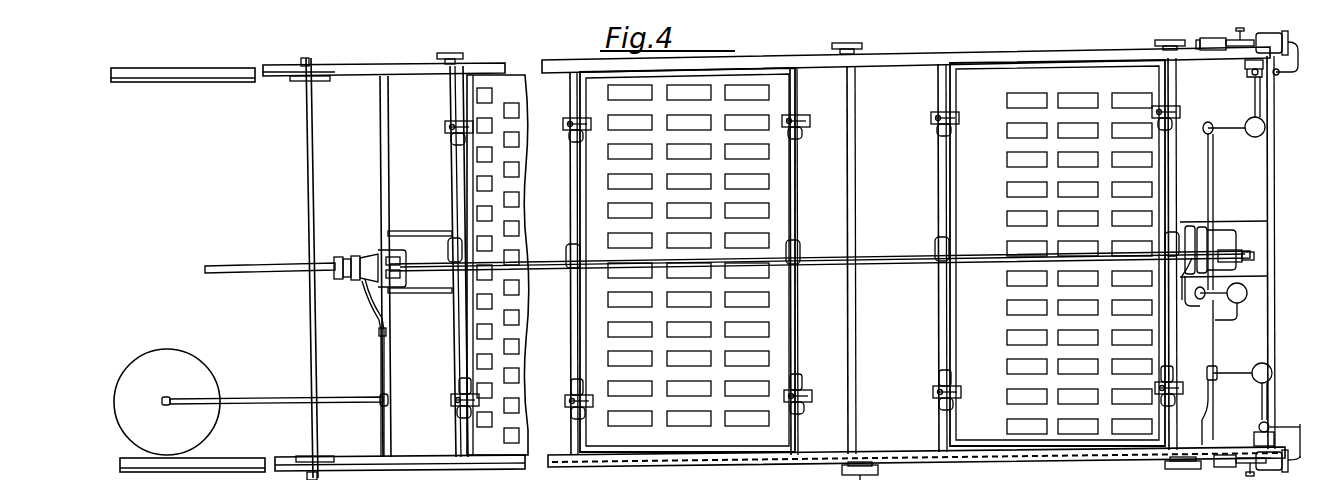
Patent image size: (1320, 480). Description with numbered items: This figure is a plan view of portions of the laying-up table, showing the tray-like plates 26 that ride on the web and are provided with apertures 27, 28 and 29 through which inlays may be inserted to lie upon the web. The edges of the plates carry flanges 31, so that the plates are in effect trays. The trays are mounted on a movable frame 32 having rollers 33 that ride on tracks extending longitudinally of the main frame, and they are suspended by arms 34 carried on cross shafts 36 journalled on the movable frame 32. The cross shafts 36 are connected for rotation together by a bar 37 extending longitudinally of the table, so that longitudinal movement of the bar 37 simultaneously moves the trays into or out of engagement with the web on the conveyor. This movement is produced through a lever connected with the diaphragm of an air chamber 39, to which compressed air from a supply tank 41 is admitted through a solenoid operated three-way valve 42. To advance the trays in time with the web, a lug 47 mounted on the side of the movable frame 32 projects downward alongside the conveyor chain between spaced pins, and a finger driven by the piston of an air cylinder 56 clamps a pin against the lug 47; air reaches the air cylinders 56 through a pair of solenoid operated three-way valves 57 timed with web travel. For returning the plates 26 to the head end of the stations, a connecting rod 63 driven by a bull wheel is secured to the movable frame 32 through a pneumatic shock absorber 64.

The plate 26 is at (597, 92).
The aperture 27 is at (487, 183).
The aperture 28 is at (615, 152).
The aperture 29 is at (1012, 159).
The flange 31 is at (517, 70).
The movable frame 32 is at (358, 66).
The roller 33 is at (443, 56).
The arm 34 is at (452, 122).
The cross shaft 36 is at (450, 212).
The bar 37 is at (430, 292).
The air chamber 39 is at (1195, 245).
The supply tank 41 is at (177, 384).
The solenoid operated three-way valve 42 is at (1240, 298).
The lug 47 is at (1214, 40).
The air cylinder 56 is at (1276, 38).
The three-way valve 57 is at (1250, 135).
The connecting rod 63 is at (245, 266).
The pneumatic shock absorber 64 is at (365, 258).